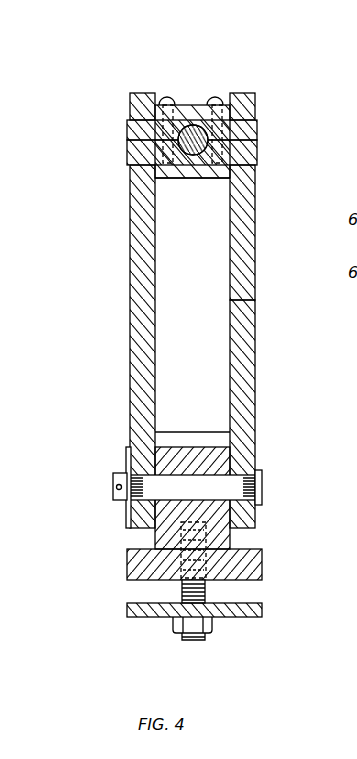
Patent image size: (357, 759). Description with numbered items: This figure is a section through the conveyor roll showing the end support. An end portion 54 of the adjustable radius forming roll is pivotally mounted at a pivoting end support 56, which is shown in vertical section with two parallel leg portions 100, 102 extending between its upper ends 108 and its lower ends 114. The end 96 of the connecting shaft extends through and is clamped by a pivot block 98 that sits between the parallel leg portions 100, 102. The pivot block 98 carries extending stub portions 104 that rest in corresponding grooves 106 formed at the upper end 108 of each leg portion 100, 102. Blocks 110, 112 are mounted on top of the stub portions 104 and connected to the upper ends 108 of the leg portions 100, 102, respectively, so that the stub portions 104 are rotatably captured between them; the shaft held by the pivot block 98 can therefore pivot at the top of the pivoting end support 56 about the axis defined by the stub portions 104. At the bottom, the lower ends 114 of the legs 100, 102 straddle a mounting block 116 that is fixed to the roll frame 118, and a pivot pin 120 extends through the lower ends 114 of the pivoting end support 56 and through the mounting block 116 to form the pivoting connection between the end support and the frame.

The end portion 54 is at (207, 136).
The pivoting end support 56 is at (76, 288).
The end of the shaft 96 is at (178, 168).
The pivot block 98 is at (188, 104).
The leg portion 100 is at (130, 362).
The leg portion 102 is at (255, 350).
The stub portion 104 is at (128, 123).
The groove 106 is at (142, 162).
The upper end 108 is at (255, 218).
The block 110 is at (140, 92).
The block 112 is at (245, 92).
The lower end 114 is at (255, 438).
The mounting block 116 is at (230, 543).
The roll frame 118 is at (262, 570).
The pivot pin 120 is at (112, 482).